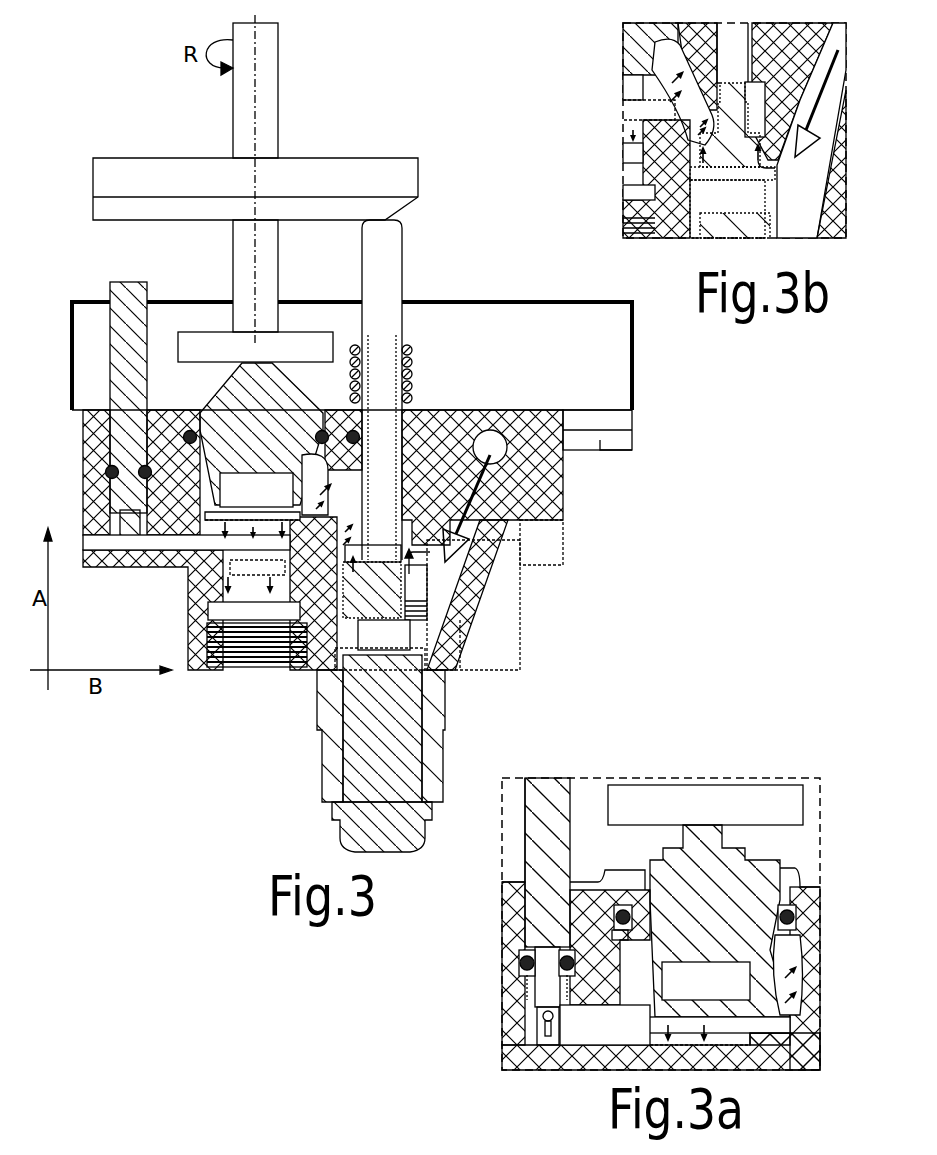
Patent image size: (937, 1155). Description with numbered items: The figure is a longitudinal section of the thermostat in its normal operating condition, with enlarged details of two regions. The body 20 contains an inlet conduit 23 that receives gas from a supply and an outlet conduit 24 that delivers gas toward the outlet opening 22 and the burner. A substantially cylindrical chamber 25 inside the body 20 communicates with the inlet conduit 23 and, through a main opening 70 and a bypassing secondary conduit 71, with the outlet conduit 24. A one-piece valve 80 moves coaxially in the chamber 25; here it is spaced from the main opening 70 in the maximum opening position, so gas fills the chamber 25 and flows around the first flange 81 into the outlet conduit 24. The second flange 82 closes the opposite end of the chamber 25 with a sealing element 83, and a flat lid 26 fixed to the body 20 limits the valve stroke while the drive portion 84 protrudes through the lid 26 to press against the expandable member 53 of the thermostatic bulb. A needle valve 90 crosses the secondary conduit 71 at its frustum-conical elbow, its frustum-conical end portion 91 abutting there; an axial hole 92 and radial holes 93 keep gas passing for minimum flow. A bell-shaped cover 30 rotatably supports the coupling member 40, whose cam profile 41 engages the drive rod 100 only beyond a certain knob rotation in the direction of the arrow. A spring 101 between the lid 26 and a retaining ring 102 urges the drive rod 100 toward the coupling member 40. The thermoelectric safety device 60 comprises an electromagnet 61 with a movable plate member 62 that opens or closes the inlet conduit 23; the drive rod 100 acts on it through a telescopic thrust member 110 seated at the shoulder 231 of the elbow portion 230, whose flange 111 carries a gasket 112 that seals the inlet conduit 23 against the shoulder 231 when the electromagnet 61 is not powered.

In FIG. 3, the body 20 is at (188, 672).
In FIG. 3, the outlet opening 22 is at (236, 668).
In FIG. 3, the inlet conduit 23 is at (354, 514).
In FIG. 3A, the inlet conduit 23 is at (821, 1026).
In FIG. 3, the outlet conduit 24 is at (266, 617).
In FIG. 3A, the outlet conduit 24 is at (750, 1050).
In FIG. 3A, the chamber 25 is at (642, 982).
In FIG. 3A, the flat lid 26 is at (775, 876).
In FIG. 3, the bell-shaped cover 30 is at (565, 301).
In FIG. 3, the coupling member 40 is at (242, 140).
In FIG. 3, the cam profile 41 is at (105, 210).
In FIG. 3, the expandable member 53 is at (222, 342).
In FIG. 3A, the expandable member 53 is at (685, 803).
In FIG. 3, the thermoelectric safety device 60 is at (443, 783).
In FIG. 3, the electromagnet 61 is at (389, 750).
In FIG. 3, the plate member 62 is at (390, 640).
In FIG. 3, the main opening 70 is at (266, 530).
In FIG. 3A, the main opening 70 is at (714, 1032).
In FIG. 3, the secondary conduit 71 is at (158, 541).
In FIG. 3A, the secondary conduit 71 is at (614, 1047).
In FIG. 3, the valve 80 is at (267, 457).
In FIG. 3A, the valve 80 is at (717, 909).
In FIG. 3A, the first flange 81 is at (793, 958).
In FIG. 3A, the second flange 82 is at (625, 882).
In FIG. 3A, the sealing element 83 is at (610, 903).
In FIG. 3A, the drive portion 84 is at (717, 830).
In FIG. 3, the needle valve 90 is at (130, 504).
In FIG. 3A, the needle valve 90 is at (525, 954).
In FIG. 3A, the frustum-conical end portion 91 is at (535, 1047).
In FIG. 3A, the axial hole 92 is at (553, 1045).
In FIG. 3A, the radial holes 93 is at (527, 1018).
In FIG. 3, the drive rod 100 is at (392, 283).
In FIG. 3, the spring 101 is at (413, 372).
In FIG. 3, the retaining ring 102 is at (410, 344).
In FIG. 3, the thrust member 110 is at (398, 608).
In FIG. 3B, the thrust member 110 is at (752, 206).
In FIG. 3B, the flange 111 is at (702, 187).
In FIG. 3B, the gasket 112 is at (643, 166).
In FIG. 3, the elbow portion 230 is at (437, 598).
In FIG. 3, the shoulder 231 is at (437, 553).